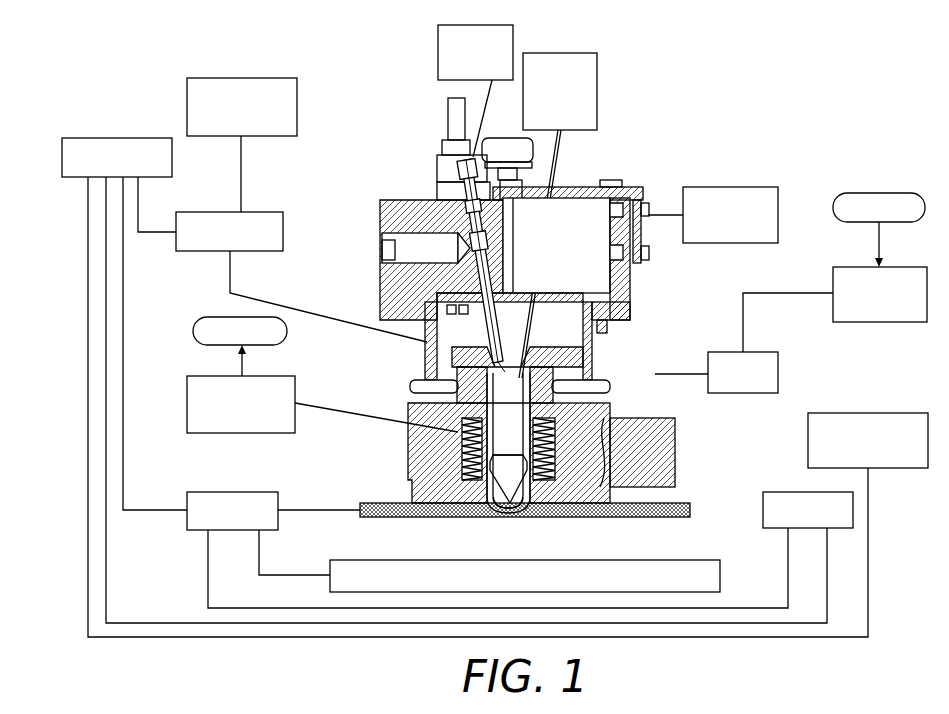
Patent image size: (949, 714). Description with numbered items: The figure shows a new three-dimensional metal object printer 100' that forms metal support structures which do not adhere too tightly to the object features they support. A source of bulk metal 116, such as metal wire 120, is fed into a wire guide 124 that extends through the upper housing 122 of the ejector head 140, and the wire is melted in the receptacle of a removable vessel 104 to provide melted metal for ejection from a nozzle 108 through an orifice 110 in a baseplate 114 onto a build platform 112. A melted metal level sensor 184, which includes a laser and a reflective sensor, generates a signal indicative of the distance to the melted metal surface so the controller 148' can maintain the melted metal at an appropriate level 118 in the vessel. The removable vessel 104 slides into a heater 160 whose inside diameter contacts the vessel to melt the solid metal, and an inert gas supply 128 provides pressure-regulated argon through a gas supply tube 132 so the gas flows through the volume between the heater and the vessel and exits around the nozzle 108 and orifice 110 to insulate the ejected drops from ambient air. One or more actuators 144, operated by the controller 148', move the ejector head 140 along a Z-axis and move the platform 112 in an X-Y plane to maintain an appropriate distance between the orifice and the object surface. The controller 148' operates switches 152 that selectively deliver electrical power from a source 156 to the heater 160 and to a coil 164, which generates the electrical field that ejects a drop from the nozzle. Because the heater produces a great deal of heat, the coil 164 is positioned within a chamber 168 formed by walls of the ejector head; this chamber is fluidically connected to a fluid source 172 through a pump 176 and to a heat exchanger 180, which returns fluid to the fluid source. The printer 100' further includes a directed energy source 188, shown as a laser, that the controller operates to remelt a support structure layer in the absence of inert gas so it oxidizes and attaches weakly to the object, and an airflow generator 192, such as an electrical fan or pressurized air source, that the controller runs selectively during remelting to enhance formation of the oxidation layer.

The 3D metal object printer 100' is at (754, 90).
The removable vessel 104 is at (507, 439).
The nozzle 108 is at (510, 497).
The orifice 110 is at (487, 508).
The build platform 112 is at (719, 575).
The baseplate 114 is at (677, 507).
The source of bulk metal 116 is at (438, 53).
The melted metal level 118 is at (500, 397).
The metal wire 120 is at (483, 367).
The upper housing 122 is at (402, 207).
The wire guide 124 is at (450, 322).
The inert gas supply 128 is at (730, 187).
The gas supply tube 132 is at (663, 215).
The ejector head 140 is at (326, 304).
The actuators 144 is at (278, 530).
The controller 148' is at (465, 370).
The switches 152 is at (283, 232).
The electrical power source 156 is at (187, 108).
The heater 160 is at (497, 422).
The coil 164 is at (553, 455).
The chamber 168 is at (458, 432).
The fluid source 172 is at (877, 322).
The pump 176 is at (778, 373).
The heat exchanger 180 is at (242, 433).
The melted metal level sensor 184 is at (597, 85).
The directed energy source 188 is at (763, 510).
The airflow generator 192 is at (808, 442).